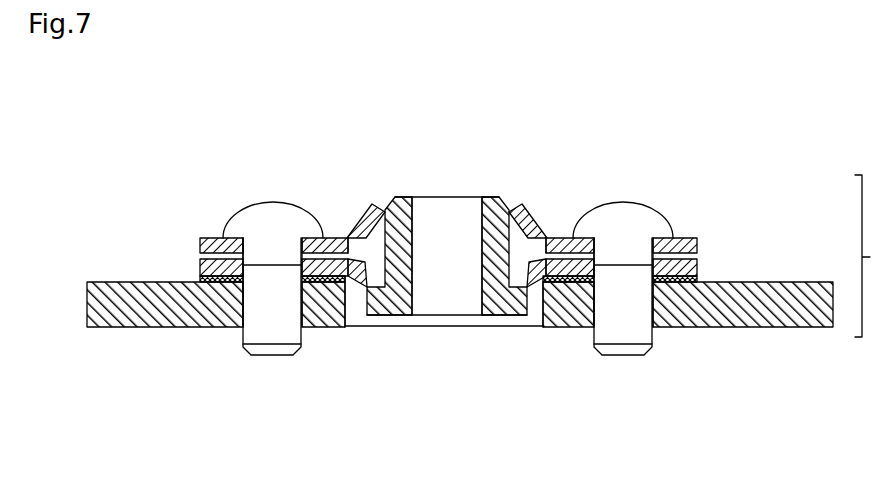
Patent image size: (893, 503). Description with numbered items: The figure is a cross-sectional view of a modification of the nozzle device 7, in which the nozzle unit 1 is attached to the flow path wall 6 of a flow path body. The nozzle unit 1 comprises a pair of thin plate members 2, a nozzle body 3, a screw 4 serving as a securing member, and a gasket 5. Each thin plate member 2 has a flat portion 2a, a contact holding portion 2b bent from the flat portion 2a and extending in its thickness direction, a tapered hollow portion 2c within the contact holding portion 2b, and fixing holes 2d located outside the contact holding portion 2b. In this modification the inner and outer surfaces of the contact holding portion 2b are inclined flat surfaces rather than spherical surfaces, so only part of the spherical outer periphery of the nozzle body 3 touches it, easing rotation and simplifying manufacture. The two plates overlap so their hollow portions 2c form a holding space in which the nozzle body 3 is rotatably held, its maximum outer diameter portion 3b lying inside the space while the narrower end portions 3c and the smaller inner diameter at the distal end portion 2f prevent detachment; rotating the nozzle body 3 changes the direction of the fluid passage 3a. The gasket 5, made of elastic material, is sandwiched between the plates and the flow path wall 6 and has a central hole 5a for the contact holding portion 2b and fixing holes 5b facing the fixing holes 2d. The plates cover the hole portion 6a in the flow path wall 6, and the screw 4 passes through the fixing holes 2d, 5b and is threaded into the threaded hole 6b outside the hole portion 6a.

The nozzle unit 1 is at (432, 143).
The thin plate member 2 is at (200, 243).
The flat portion 2a is at (333, 240).
The contact holding portion 2b is at (338, 236).
The hollow portion 2c is at (372, 292).
The fixing hole 2d is at (657, 236).
The distal end portion 2f is at (350, 236).
The nozzle body 3 is at (490, 200).
The fluid passage 3a is at (465, 318).
The maximum outer diameter portion 3b is at (373, 305).
The end portion 3c is at (398, 200).
The screw 4 is at (255, 200).
The gasket 5 is at (200, 278).
The central hole 5a is at (340, 280).
The fixing hole 5b is at (625, 280).
The flow path wall 6 is at (160, 312).
The hole portion 6a is at (345, 310).
The threaded hole 6b is at (243, 322).
The nozzle device 7 is at (872, 256).